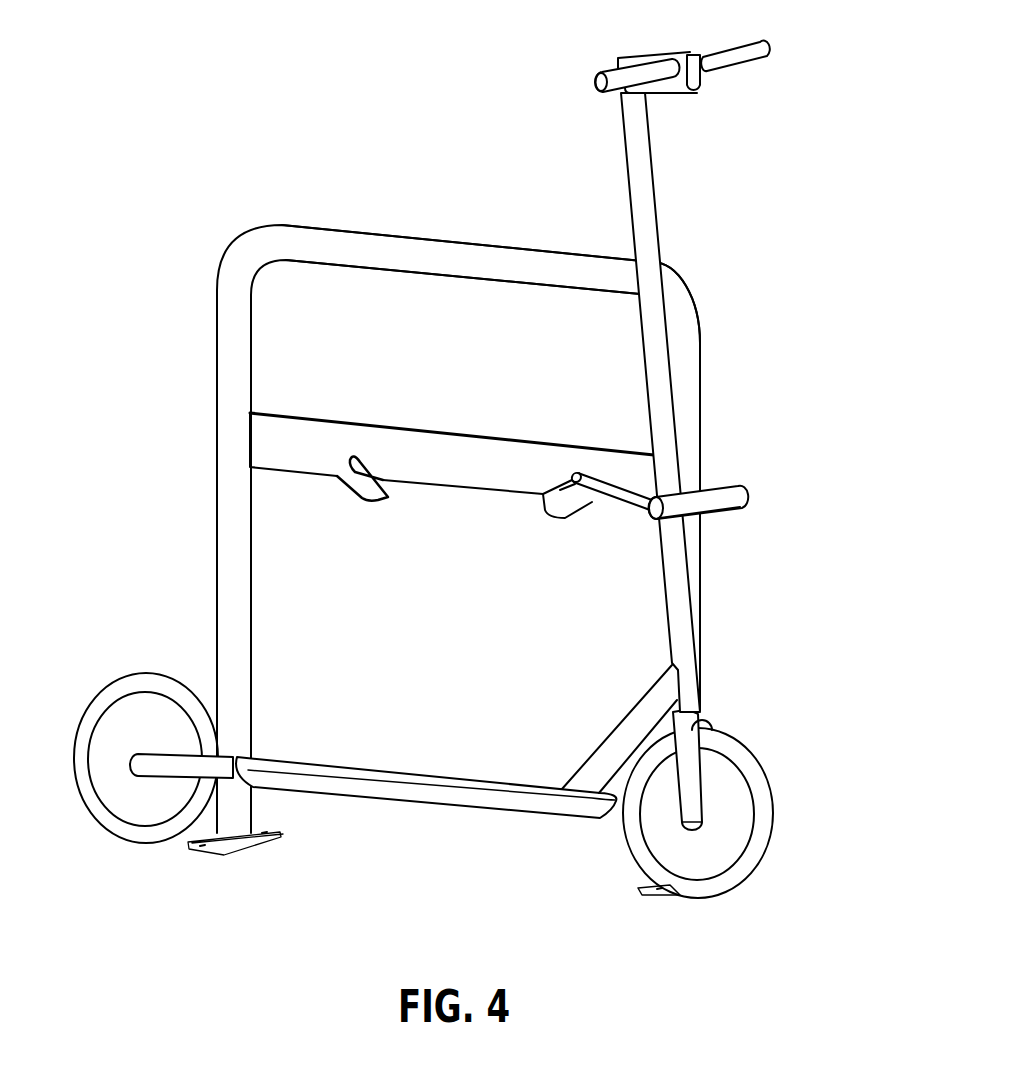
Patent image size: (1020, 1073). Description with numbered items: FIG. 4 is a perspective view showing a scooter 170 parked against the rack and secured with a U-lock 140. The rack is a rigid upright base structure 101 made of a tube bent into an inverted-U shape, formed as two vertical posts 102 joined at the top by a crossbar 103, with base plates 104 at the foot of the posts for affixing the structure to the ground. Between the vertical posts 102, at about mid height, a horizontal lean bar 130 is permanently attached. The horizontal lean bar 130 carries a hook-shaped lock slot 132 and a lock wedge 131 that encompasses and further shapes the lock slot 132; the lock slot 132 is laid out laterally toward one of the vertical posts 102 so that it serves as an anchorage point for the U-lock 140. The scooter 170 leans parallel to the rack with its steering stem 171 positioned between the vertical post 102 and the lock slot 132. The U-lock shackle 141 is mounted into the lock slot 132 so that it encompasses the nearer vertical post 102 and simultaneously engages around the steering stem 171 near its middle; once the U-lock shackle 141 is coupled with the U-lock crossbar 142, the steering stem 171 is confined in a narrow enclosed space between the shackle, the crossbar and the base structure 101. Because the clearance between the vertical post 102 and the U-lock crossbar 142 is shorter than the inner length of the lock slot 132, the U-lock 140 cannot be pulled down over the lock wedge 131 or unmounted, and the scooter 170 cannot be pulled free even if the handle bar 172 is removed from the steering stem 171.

The base structure 101 is at (243, 236).
The vertical posts 102 is at (688, 356).
The crossbar 103 is at (432, 247).
The base plates 104 is at (207, 847).
The horizontal lean bar 130 is at (403, 425).
The lock wedge 131 is at (560, 520).
The lock slot 132 is at (565, 477).
The U-lock 140 is at (748, 485).
The U-lock shackle 141 is at (630, 503).
The U-lock crossbar 142 is at (718, 511).
The scooter 170 is at (447, 813).
The steering stem 171 is at (643, 181).
The handle bar 172 is at (616, 74).